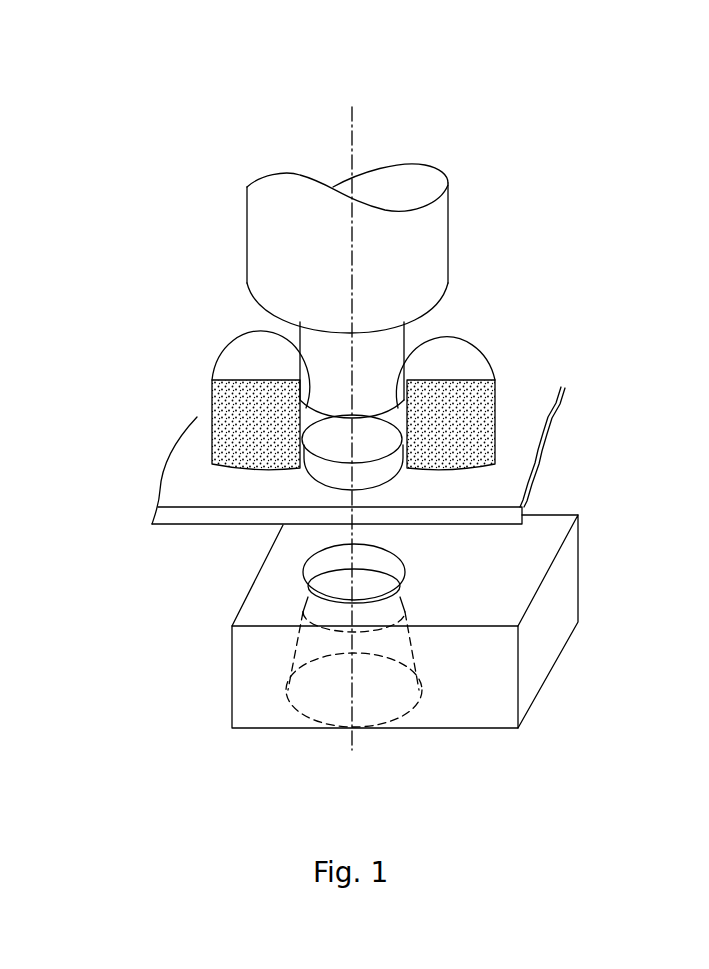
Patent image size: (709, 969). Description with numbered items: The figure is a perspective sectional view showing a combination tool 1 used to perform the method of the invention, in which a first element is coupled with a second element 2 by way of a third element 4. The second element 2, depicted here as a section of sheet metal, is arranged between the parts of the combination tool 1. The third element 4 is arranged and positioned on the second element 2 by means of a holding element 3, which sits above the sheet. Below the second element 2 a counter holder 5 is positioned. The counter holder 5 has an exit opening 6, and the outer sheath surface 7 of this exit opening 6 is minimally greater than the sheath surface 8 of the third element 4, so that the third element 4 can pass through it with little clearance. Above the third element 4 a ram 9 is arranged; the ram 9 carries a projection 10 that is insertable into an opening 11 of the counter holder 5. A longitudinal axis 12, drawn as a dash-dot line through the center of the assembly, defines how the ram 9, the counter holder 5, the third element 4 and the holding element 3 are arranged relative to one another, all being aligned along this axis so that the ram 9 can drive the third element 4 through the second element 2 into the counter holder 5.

The combination tool 1 is at (512, 143).
The second element 2 is at (498, 482).
The holding element 3 is at (463, 358).
The third element 4 is at (330, 436).
The counter holder 5 is at (543, 643).
The exit opening 6 is at (372, 593).
The outer sheath surface 7 is at (368, 558).
The sheath surface 8 is at (330, 473).
The ram 9 is at (428, 258).
The projection 10 is at (375, 370).
The opening 11 is at (302, 335).
The longitudinal axis 12 is at (352, 132).